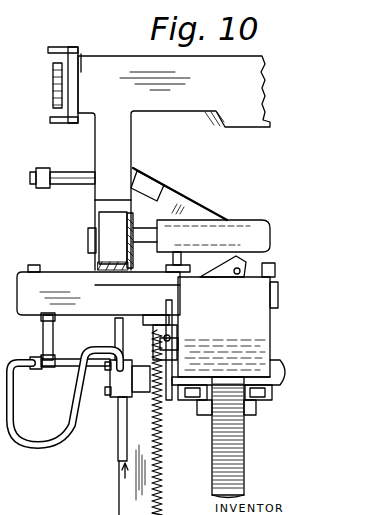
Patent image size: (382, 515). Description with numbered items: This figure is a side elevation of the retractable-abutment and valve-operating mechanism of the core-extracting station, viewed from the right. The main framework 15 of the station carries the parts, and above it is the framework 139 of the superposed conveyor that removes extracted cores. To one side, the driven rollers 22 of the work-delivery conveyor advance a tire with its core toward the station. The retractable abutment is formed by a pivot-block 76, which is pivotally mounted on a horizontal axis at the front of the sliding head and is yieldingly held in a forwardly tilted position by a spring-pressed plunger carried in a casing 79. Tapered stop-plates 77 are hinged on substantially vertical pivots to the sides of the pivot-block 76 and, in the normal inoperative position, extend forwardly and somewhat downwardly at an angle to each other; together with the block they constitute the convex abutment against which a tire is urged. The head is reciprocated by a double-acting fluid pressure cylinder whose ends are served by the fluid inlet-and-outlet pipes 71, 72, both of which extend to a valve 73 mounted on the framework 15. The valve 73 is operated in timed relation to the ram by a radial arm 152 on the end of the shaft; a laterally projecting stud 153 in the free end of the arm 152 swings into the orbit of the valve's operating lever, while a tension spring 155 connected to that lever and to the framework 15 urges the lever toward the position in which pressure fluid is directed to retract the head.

The framework 139 is at (125, 55).
The casing 79 is at (65, 190).
The pivot-block 76 is at (147, 174).
The stop-plates 77 is at (199, 203).
The driven rollers 22 is at (250, 221).
The stud 153 is at (142, 316).
The fluid inlet-and-outlet pipe 71 is at (167, 318).
The valve 73 is at (120, 372).
The fluid inlet-and-outlet pipe 72 is at (42, 447).
The framework 15 is at (113, 433).
The radial arm 152 is at (168, 397).
The tension spring 155 is at (158, 455).